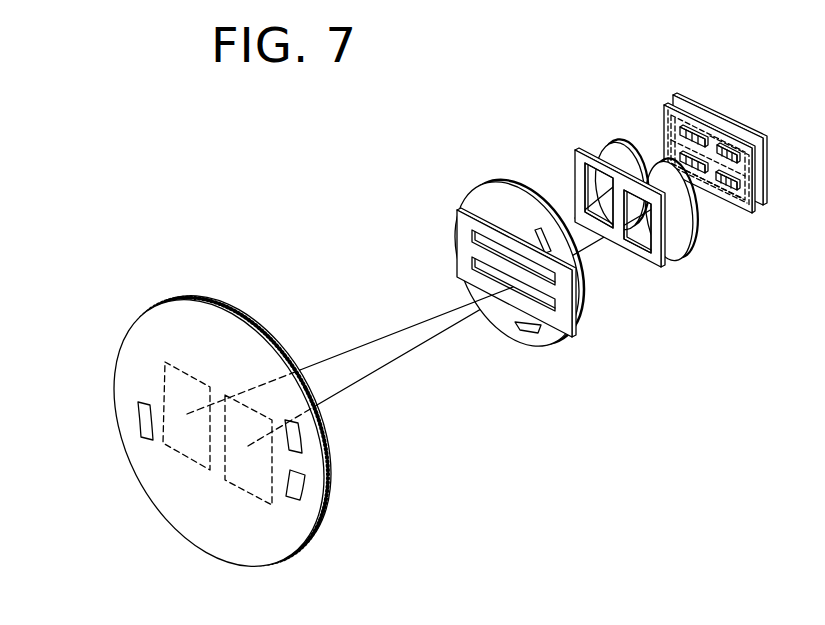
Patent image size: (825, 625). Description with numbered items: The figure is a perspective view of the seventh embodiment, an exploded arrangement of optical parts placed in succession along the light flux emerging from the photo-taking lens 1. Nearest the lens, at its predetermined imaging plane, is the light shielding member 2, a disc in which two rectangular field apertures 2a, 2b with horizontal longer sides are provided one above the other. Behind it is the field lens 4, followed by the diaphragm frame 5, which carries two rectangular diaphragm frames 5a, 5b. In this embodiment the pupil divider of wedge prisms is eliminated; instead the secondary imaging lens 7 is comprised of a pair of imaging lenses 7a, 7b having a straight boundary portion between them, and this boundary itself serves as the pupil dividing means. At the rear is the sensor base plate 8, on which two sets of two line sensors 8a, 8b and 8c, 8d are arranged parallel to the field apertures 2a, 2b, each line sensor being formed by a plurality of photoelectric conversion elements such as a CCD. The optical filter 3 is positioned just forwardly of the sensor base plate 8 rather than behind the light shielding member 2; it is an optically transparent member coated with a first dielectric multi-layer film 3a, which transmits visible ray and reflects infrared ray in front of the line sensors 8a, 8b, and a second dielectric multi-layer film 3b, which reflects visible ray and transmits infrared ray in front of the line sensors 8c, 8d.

The photo-taking lens 1 is at (172, 310).
The light shielding member 2 is at (488, 265).
The field aperture 2a is at (472, 264).
The field aperture 2b is at (472, 236).
The optical filter 3 is at (690, 160).
The first dielectric multi-layer film 3a is at (688, 125).
The second dielectric multi-layer film 3b is at (738, 203).
The field lens 4 is at (480, 196).
The diaphragm frame 5 is at (589, 220).
The diaphragm frame 5a is at (583, 187).
The diaphragm frame 5b is at (636, 257).
The secondary imaging lens 7 is at (632, 199).
The imaging lens 7a is at (610, 157).
The imaging lens 7b is at (673, 246).
The sensor base plate 8 is at (768, 157).
The line sensor 8a is at (706, 130).
The line sensor 8b is at (732, 151).
The line sensor 8c is at (697, 175).
The line sensor 8d is at (740, 186).